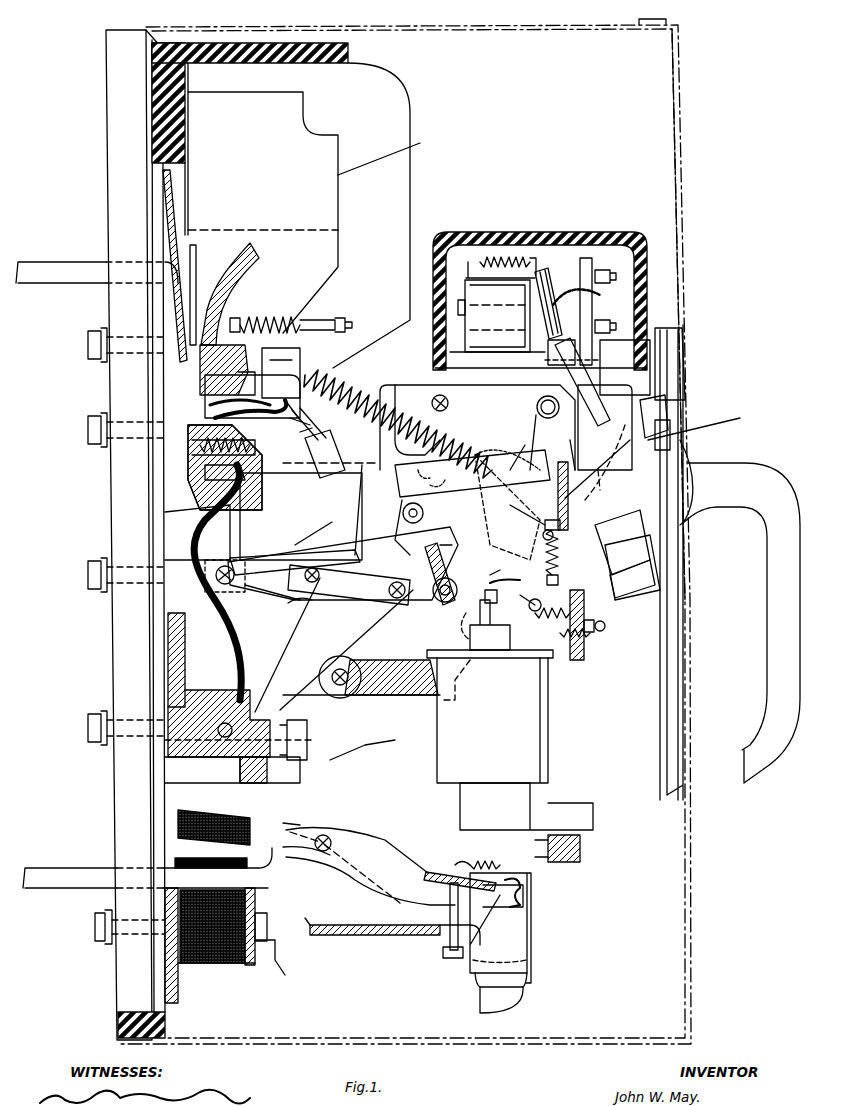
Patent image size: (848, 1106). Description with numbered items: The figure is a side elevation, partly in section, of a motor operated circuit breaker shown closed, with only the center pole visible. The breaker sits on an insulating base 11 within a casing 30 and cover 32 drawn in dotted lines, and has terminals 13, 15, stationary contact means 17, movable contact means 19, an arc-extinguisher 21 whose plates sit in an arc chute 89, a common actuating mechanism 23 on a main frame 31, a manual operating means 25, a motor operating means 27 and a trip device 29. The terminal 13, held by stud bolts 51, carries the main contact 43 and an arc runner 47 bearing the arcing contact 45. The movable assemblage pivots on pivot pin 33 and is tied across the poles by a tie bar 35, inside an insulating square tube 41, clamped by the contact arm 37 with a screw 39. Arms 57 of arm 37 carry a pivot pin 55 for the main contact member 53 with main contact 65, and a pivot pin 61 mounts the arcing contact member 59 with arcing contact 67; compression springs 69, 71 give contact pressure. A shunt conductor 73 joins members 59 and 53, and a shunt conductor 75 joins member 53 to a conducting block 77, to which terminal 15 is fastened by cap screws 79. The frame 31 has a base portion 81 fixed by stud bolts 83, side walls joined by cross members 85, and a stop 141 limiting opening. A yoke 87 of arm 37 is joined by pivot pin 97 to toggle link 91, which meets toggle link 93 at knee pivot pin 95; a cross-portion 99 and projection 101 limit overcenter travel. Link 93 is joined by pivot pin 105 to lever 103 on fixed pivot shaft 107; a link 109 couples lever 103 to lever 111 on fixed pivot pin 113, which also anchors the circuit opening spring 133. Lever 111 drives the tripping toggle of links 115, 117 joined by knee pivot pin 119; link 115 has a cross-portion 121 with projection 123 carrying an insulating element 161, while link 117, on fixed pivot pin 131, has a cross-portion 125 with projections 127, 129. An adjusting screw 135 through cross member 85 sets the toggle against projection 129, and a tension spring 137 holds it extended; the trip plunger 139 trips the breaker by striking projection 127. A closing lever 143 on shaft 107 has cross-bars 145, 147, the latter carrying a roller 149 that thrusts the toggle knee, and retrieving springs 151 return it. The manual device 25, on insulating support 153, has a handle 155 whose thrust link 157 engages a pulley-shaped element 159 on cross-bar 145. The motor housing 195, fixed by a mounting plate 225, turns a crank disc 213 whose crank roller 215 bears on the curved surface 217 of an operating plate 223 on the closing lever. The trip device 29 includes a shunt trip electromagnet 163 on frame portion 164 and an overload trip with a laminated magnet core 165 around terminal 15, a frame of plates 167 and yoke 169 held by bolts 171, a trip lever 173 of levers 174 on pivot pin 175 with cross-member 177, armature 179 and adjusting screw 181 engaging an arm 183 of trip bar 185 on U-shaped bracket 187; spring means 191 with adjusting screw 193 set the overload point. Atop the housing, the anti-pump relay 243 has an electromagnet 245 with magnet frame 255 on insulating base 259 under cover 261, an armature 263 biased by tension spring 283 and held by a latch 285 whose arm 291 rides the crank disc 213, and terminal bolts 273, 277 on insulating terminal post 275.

The base 11 is at (106, 178).
The terminal member 13 is at (70, 262).
The terminal member 15 is at (80, 882).
The stationary contact means 17 is at (160, 382).
The movable contact means 19 is at (284, 367).
The arc-extinguisher 21 is at (280, 185).
The actuating mechanism 23 is at (346, 625).
The manual operating means 25 is at (727, 450).
The electric motor operating means 27 is at (378, 768).
The trip device 29 is at (623, 879).
The casing 30 is at (443, 26).
The main frame 31 is at (338, 508).
The cover 32 is at (680, 95).
The pivot pin 33 is at (210, 765).
The tie bar 35 is at (312, 430).
The contact arm 37 is at (340, 392).
The screw 39 is at (336, 444).
The square tube 41 is at (308, 410).
The main contact 43 is at (190, 448).
The arcing contact 45 is at (194, 265).
The arc runner 47 is at (183, 212).
The stud bolts 51 is at (88, 345).
The main contact member 53 is at (200, 420).
The pivot pin 55 is at (215, 467).
The arms 57 is at (165, 523).
The arcing contact member 59 is at (240, 300).
The pivot pin 61 is at (208, 385).
The main contact 65 is at (203, 472).
The arcing contact 67 is at (232, 248).
The compression spring 69 is at (195, 460).
The compression spring 71 is at (312, 316).
The flexible shunt conductor 73 is at (247, 375).
The flexible shunt conductor 75 is at (212, 582).
The conducting block 77 is at (203, 700).
The cap screws 79 is at (308, 755).
The base portion 81 is at (175, 640).
The stud bolts 83 is at (88, 575).
The cross members 85 is at (560, 460).
The yoke 87 is at (290, 652).
The arc chute 89 is at (338, 205).
The toggle link 91 is at (258, 590).
The toggle link 93 is at (358, 560).
The knee pivot pin 95 is at (300, 600).
The pivot pin 97 is at (226, 586).
The cross-portion 99 is at (293, 545).
The projection 101 is at (288, 556).
The lever 103 is at (400, 540).
The pivot pin 105 is at (395, 596).
The pivot shaft 107 is at (449, 572).
The link 109 is at (429, 474).
The lever 111 is at (536, 453).
The pivot pin 113 is at (507, 505).
The toggle link 115 is at (522, 519).
The toggle link 117 is at (508, 575).
The knee pivot pin 119 is at (543, 536).
The cross-portion 121 is at (565, 548).
The projection 123 is at (605, 467).
The cross-portion 125 is at (504, 604).
The projection 127 is at (491, 575).
The projection 129 is at (555, 637).
The pivot pin 131 is at (553, 616).
The circuit opening spring 133 is at (477, 427).
The adjusting screw 135 is at (605, 626).
The tension spring 137 is at (545, 600).
The trip plunger 139 is at (470, 618).
The stop 141 is at (355, 485).
The closing lever 143 is at (470, 675).
The cross-bar 145 is at (632, 567).
The cross-bar 147 is at (418, 695).
The roller 149 is at (338, 698).
The retrieving springs 151 is at (441, 538).
The insulating support 153 is at (645, 424).
The operating handle 155 is at (748, 500).
The thrust link 157 is at (648, 530).
The pulley shaped element 159 is at (655, 575).
The insulating element 161 is at (597, 469).
The shunt trip electromagnet 163 is at (550, 703).
The portion of frame 164 is at (560, 658).
The magnet core 165 is at (220, 965).
The plates 167 is at (280, 960).
The yoke portion 169 is at (375, 935).
The bolts 171 is at (96, 930).
The trip lever 173 is at (368, 842).
The levers 174 is at (306, 855).
The pivot pin 175 is at (325, 834).
The cross-member 177 is at (440, 866).
The armature 179 is at (208, 812).
The adjusting screw 181 is at (487, 928).
The arm 183 is at (476, 863).
The trip bar 185 is at (582, 845).
The U-shaped bracket 187 is at (580, 806).
The spring means 191 is at (525, 903).
The adjusting screw 193 is at (528, 993).
The housing 195 is at (398, 732).
The crank disc 213 is at (530, 382).
The crank roller 215 is at (537, 407).
The curved surface 217 is at (548, 442).
The operating plate 223 is at (655, 398).
The mounting plate 225 is at (338, 742).
The anti-pump relay 243 is at (545, 218).
The electromagnet 245 is at (470, 340).
The magnet frame 255 is at (468, 275).
The base 259 is at (470, 361).
The cover 261 is at (618, 232).
The armature 263 is at (555, 270).
The terminal bolt 273 is at (618, 278).
The terminal post 275 is at (592, 268).
The terminal bolt 277 is at (618, 322).
The tension spring 283 is at (507, 257).
The latch 285 is at (542, 370).
The arm or cam follower 291 is at (625, 367).